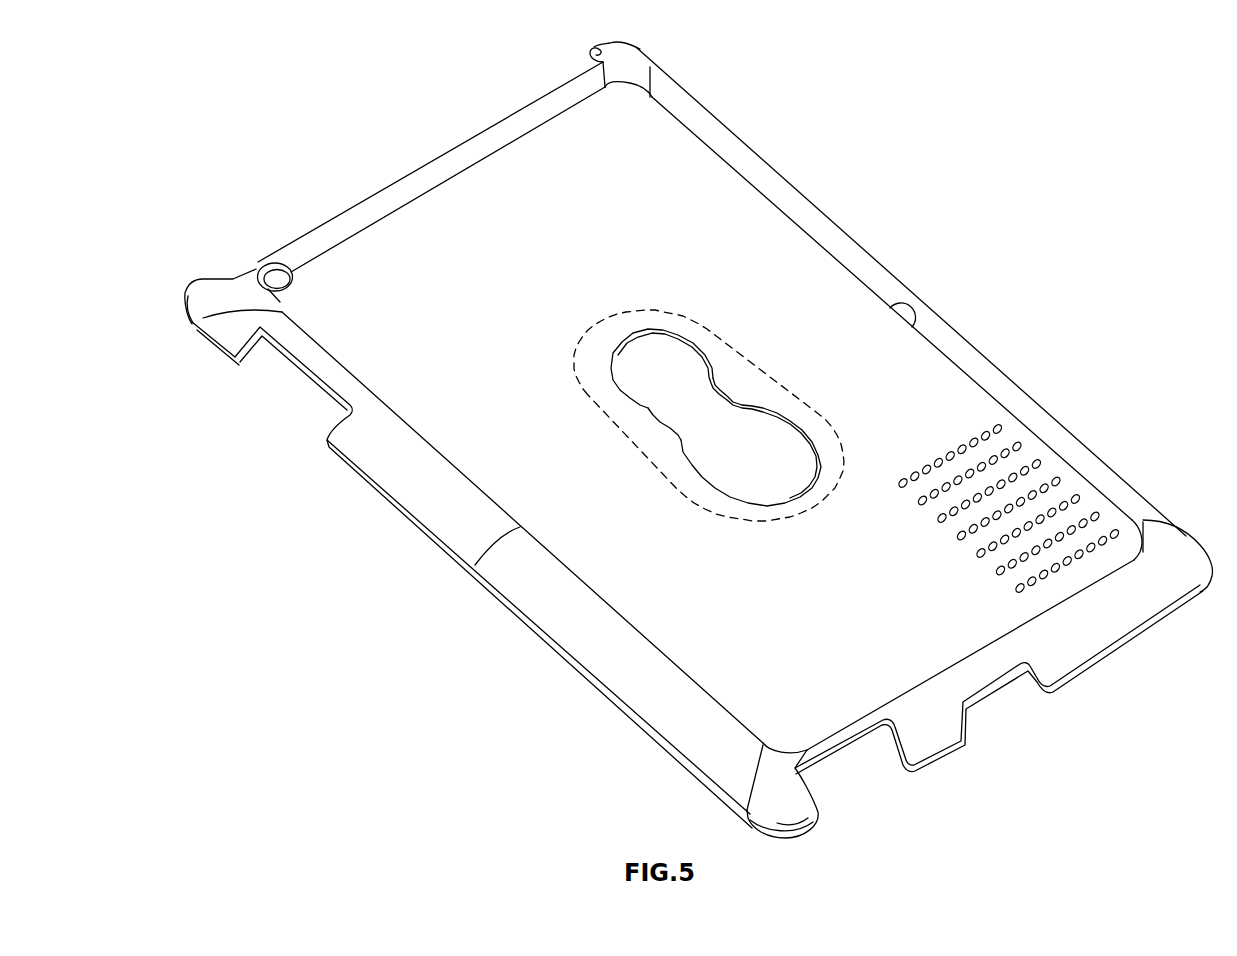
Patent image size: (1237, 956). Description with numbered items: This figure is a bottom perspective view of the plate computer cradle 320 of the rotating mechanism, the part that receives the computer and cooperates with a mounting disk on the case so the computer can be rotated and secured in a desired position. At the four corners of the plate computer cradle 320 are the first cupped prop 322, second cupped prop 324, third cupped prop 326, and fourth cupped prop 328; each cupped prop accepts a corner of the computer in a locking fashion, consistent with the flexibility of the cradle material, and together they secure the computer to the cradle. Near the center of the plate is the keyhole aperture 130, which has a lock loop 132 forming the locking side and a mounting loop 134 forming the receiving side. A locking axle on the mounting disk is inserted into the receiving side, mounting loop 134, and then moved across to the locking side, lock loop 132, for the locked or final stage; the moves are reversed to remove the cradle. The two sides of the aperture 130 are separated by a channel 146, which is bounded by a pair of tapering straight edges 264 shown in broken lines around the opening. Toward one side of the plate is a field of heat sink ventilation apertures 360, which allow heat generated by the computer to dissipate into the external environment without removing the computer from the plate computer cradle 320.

The plate computer cradle 320 is at (400, 170).
The first cupped prop 322 is at (190, 291).
The second cupped prop 324 is at (780, 820).
The third cupped prop 326 is at (637, 49).
The fourth cupped prop 328 is at (1205, 594).
The heat sink ventilation apertures 360 is at (1097, 514).
The tapering straight edges 264 is at (718, 389).
The keyhole aperture 130 is at (803, 383).
The lock loop 132 is at (662, 368).
The mounting loop 134 is at (823, 419).
The channel 146 is at (695, 409).